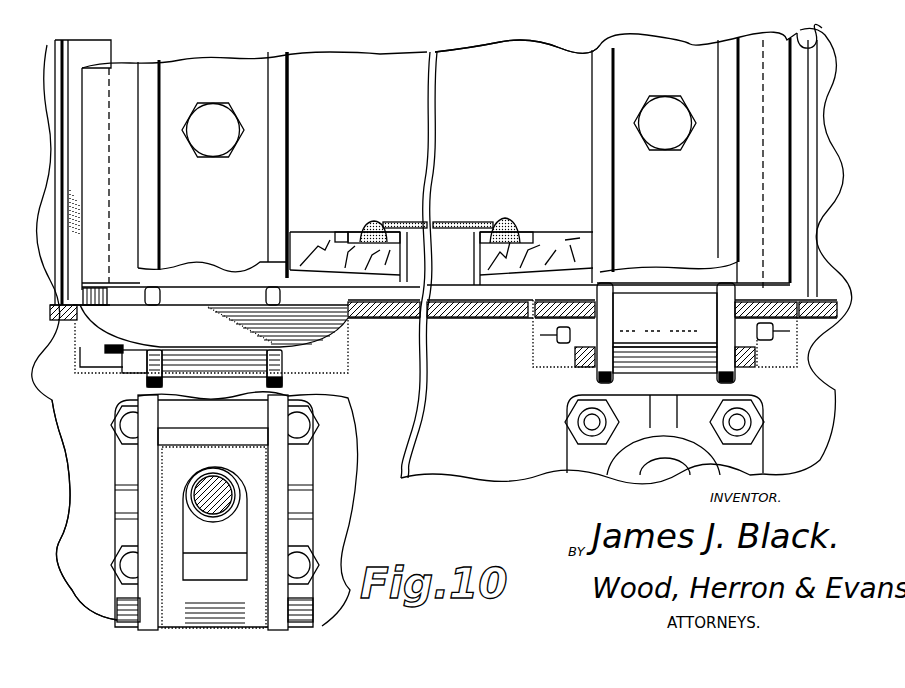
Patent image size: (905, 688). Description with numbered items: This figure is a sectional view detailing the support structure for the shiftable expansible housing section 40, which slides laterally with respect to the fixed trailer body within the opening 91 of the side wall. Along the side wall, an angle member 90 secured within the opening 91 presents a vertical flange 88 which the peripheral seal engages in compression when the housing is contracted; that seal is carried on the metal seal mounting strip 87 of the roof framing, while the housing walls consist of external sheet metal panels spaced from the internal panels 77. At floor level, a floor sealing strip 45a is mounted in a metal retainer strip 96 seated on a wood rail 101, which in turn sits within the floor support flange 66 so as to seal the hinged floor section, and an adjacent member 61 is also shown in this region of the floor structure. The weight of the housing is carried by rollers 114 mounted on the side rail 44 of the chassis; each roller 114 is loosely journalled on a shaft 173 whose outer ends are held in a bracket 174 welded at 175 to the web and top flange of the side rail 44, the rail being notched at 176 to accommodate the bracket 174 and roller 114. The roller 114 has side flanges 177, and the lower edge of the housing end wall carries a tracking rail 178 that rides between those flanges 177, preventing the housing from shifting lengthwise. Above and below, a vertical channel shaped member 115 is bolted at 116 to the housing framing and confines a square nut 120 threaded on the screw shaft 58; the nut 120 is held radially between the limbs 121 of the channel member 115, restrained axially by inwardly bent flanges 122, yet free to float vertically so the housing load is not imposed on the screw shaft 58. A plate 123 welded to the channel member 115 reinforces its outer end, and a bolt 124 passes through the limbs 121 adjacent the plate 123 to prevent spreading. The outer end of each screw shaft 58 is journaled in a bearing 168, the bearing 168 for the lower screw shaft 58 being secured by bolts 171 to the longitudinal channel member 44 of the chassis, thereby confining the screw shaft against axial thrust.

The expansible housing section 40 is at (535, 42).
The side rail 44 is at (88, 487).
The floor sealing strip 45a is at (473, 222).
The screw shaft 58 is at (212, 510).
The side plate 61 is at (290, 212).
The floor support flange 66 is at (477, 262).
The internal panel 77 is at (468, 62).
The seal mounting strip 87 is at (128, 70).
The vertical flange 88 is at (86, 50).
The angle member 90 is at (800, 22).
The opening 91 is at (753, 290).
The retainer strip 96 is at (338, 238).
The wood rail 101 is at (562, 242).
The roller 114 is at (173, 360).
The channel shaped member 115 is at (290, 143).
The bolt 116 is at (214, 118).
The nut 120 is at (197, 540).
The limb 121 is at (303, 477).
The flange 122 is at (170, 535).
The plate 123 is at (228, 430).
The bolt 124 is at (127, 602).
The bearing 168 is at (573, 457).
The bolt 171 is at (303, 432).
The shaft 173 is at (323, 347).
The bracket 174 is at (188, 308).
The weld 175 is at (93, 375).
The notch 176 is at (347, 285).
The side flange 177 is at (147, 385).
The tracking rail 178 is at (233, 293).